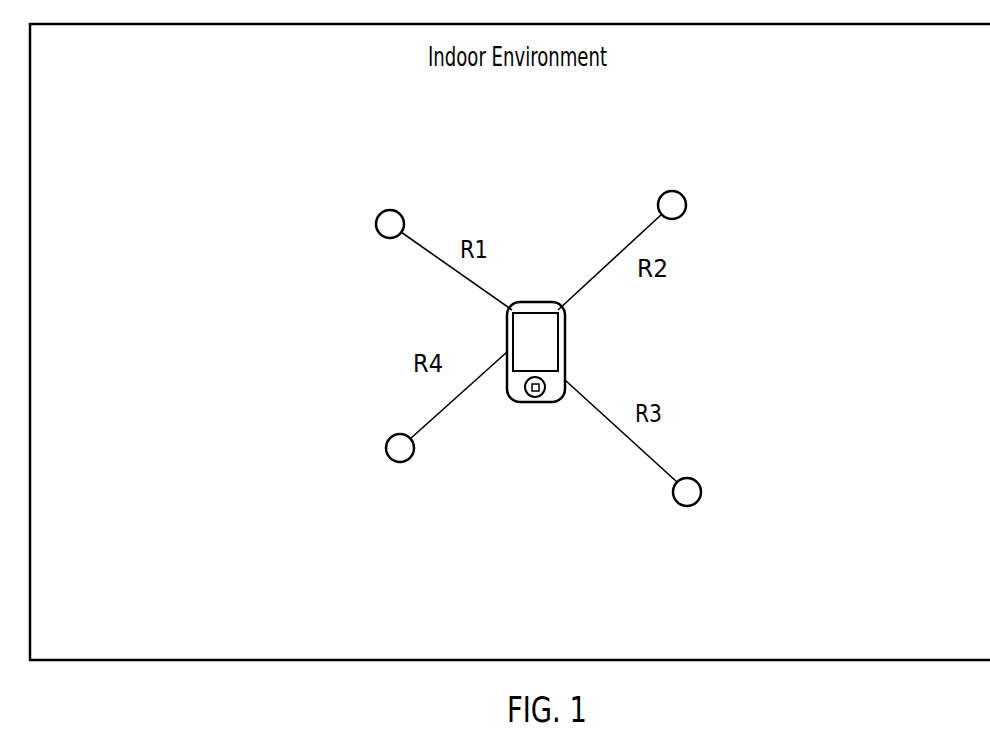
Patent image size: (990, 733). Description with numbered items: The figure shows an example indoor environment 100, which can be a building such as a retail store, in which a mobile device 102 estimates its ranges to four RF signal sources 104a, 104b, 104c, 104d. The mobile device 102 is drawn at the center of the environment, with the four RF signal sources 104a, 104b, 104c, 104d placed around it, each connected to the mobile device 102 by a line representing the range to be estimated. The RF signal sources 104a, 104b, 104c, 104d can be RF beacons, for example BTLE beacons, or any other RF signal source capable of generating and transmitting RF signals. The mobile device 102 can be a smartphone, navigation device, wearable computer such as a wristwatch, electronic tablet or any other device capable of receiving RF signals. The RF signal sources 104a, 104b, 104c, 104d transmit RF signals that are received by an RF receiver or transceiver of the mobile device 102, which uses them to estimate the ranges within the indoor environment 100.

The indoor environment 100 is at (967, 66).
The mobile device 102 is at (565, 327).
The RF signal source 104a is at (376, 226).
The RF signal source 104b is at (686, 204).
The RF signal source 104c is at (701, 490).
The RF signal source 104d is at (387, 450).